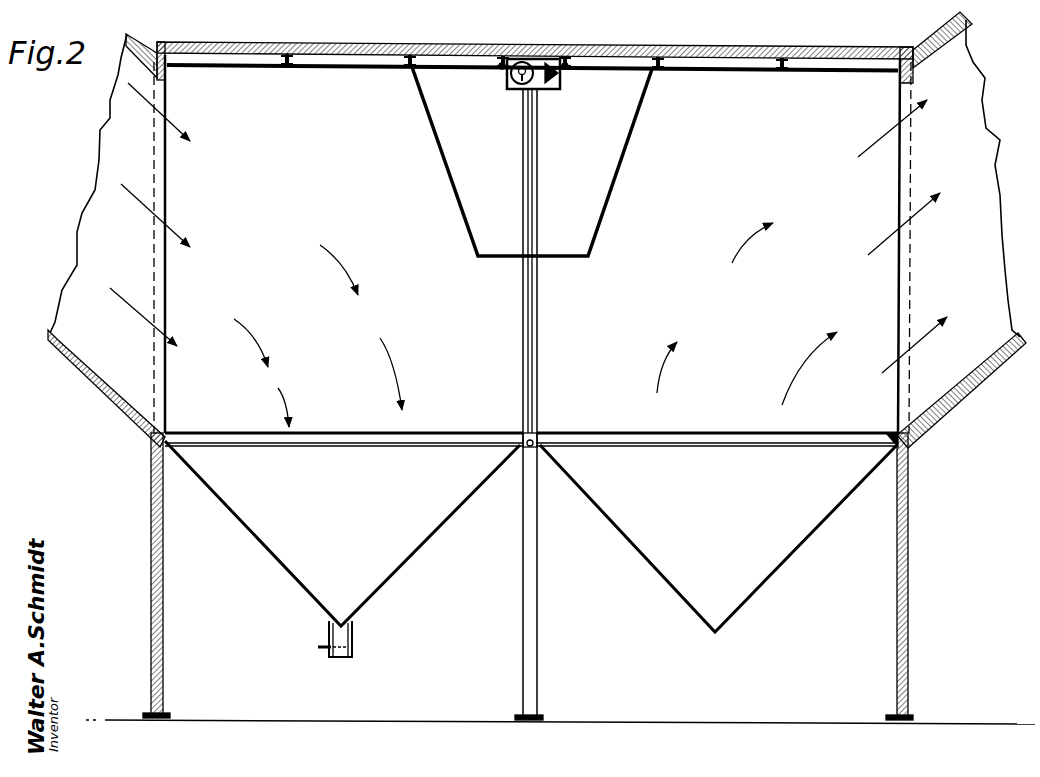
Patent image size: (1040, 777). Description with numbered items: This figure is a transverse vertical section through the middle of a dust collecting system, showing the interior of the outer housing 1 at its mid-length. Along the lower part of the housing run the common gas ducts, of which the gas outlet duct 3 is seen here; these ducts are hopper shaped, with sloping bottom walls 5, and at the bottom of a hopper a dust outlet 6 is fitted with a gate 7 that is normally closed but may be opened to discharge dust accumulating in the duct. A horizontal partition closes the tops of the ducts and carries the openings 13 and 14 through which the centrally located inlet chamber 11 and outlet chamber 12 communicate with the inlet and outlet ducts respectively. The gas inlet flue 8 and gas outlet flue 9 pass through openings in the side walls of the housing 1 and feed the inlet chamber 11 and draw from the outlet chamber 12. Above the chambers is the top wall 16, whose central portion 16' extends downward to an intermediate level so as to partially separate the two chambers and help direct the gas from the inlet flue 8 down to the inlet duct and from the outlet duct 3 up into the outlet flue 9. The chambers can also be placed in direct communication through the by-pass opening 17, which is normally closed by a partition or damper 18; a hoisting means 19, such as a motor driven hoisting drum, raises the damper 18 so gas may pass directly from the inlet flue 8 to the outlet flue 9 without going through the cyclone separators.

The outer housing 1 is at (445, 53).
The gas outlet duct 3 is at (740, 533).
The sloping bottom walls 5 is at (412, 553).
The dust outlets 6 is at (350, 632).
The gates 7 is at (325, 649).
The gas inlet flue 8 is at (108, 126).
The gas outlet flue 9 is at (963, 76).
The inlet chamber 11 is at (318, 193).
The outlet chamber 12 is at (733, 215).
The opening 13 is at (347, 452).
The opening 14 is at (742, 449).
The top wall 16 is at (532, 84).
The central portion of top wall 16' is at (532, 181).
The by-pass opening 17 is at (541, 342).
The partition or damper 18 is at (541, 290).
The hoisting means 19 is at (498, 89).